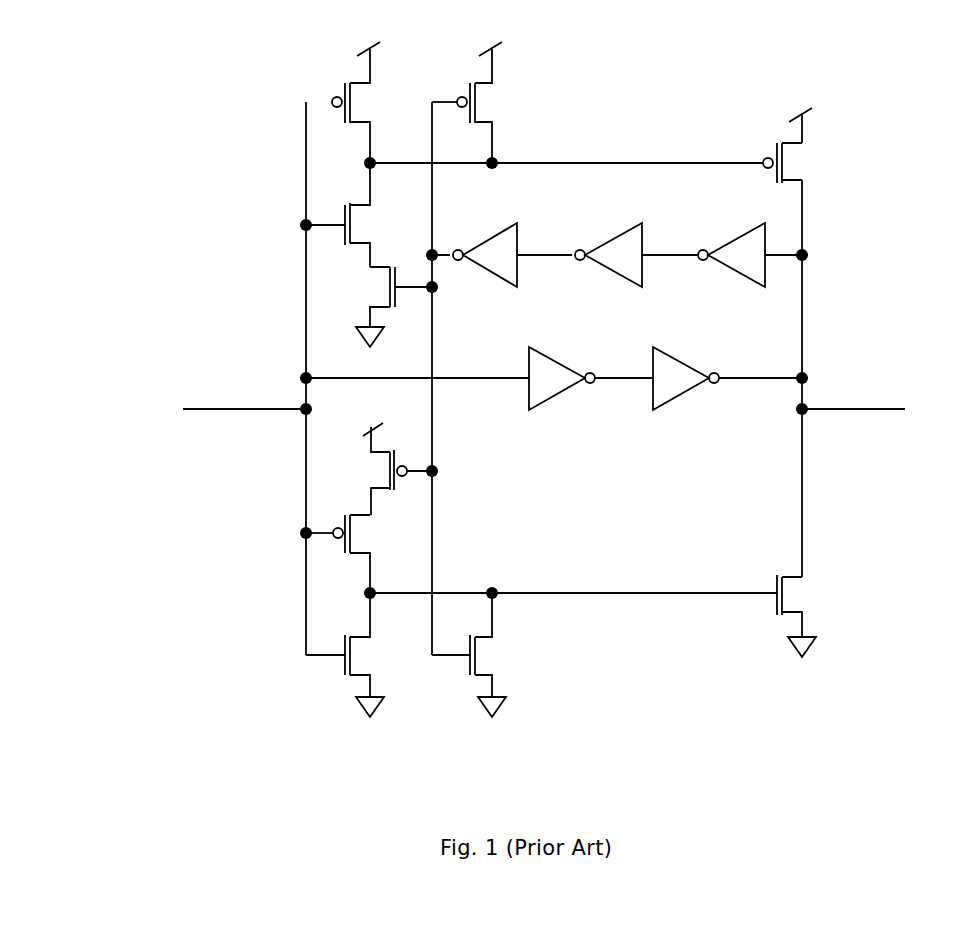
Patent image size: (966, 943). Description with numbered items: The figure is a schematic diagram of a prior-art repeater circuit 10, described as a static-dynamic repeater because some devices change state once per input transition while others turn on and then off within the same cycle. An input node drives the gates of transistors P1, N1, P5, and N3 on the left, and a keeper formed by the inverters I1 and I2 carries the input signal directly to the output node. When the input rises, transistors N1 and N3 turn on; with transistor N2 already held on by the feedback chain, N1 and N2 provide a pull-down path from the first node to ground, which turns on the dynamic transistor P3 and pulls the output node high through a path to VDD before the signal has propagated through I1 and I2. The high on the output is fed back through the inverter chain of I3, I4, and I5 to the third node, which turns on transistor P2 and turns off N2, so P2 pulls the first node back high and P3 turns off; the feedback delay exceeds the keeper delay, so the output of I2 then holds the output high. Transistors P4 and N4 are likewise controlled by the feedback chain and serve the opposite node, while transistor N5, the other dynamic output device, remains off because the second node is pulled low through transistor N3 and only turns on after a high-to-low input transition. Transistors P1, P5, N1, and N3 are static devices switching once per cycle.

The repeater circuit 10 is at (54, 45).
The transistor P1 is at (341, 102).
The transistor P2 is at (466, 102).
The transistor P3 is at (776, 145).
The transistor P4 is at (397, 469).
The transistor P5 is at (338, 541).
The transistor N1 is at (338, 215).
The transistor N2 is at (382, 307).
The transistor N3 is at (345, 655).
The transistor N4 is at (467, 655).
The transistor N5 is at (784, 603).
The inverter I1 is at (562, 390).
The inverter I2 is at (686, 385).
The inverter I3 is at (731, 248).
The inverter I4 is at (608, 248).
The inverter I5 is at (485, 248).